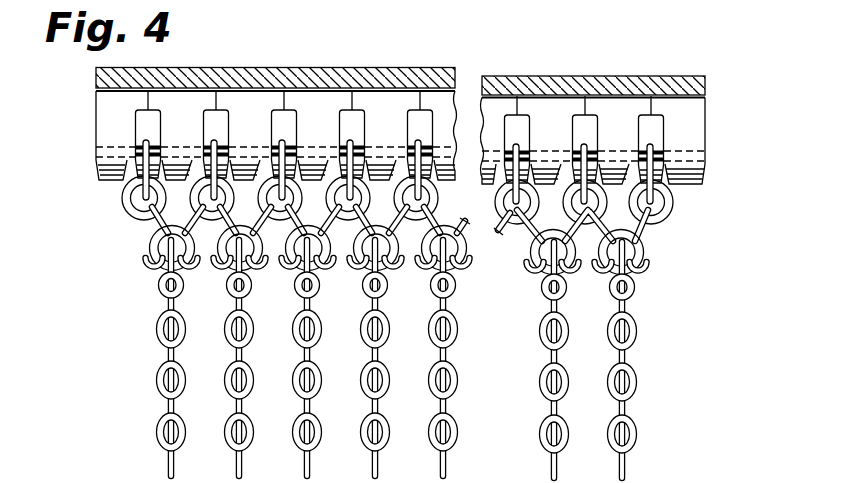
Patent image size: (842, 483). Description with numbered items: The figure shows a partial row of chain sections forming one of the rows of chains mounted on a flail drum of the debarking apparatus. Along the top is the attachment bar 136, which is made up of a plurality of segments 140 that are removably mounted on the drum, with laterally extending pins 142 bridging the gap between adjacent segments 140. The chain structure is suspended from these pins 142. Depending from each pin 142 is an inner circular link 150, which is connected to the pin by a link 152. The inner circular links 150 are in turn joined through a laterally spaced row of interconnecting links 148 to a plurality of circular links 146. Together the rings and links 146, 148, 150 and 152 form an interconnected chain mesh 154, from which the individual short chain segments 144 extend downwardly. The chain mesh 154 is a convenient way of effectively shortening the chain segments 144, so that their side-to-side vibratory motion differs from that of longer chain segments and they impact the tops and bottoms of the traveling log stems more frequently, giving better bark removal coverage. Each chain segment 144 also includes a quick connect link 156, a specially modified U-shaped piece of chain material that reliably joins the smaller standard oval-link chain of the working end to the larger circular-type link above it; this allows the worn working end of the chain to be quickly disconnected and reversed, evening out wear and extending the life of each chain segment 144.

The attachment bar 136 is at (96, 123).
The segment 140 is at (180, 112).
The pin 142 is at (138, 217).
The chain segment 144 is at (135, 476).
The circular link 146 is at (143, 254).
The interconnecting link 148 is at (647, 228).
The inner circular link 150 is at (673, 215).
The link 152 is at (587, 148).
The chain mesh 154 is at (92, 175).
The quick connect link 156 is at (543, 298).